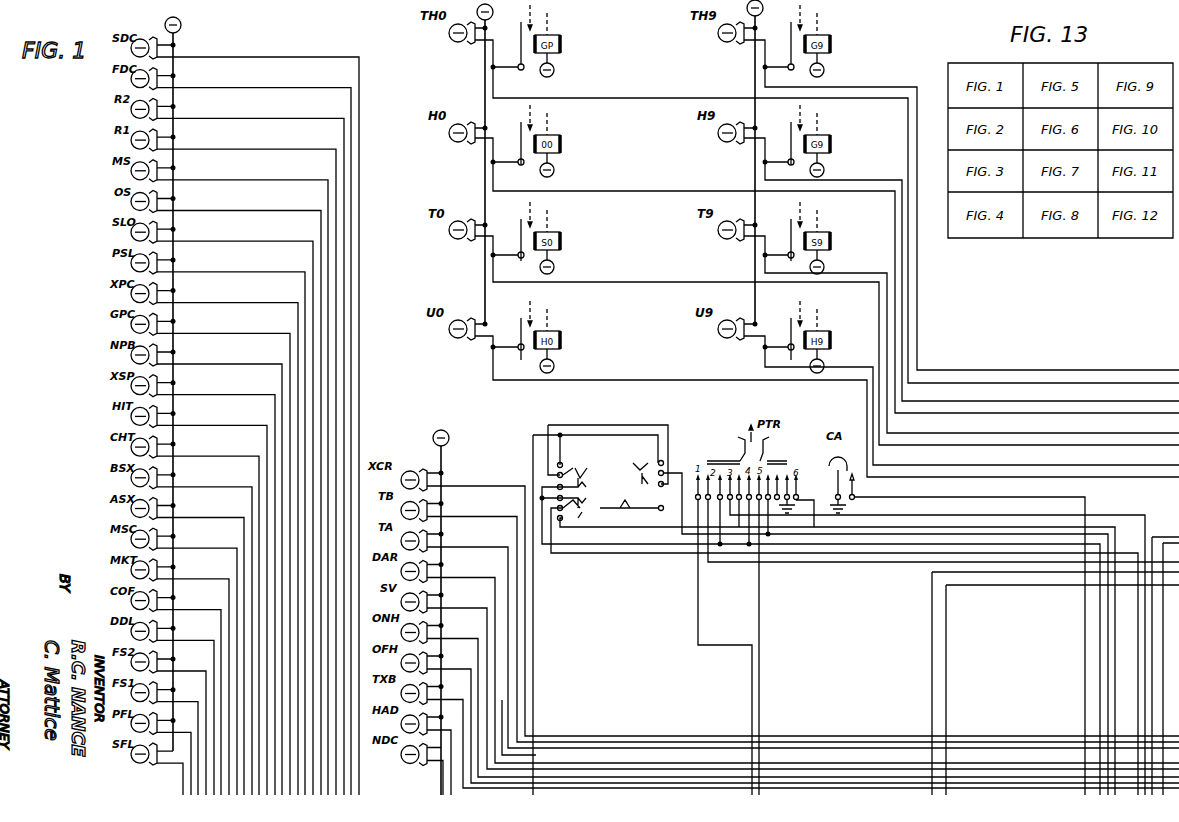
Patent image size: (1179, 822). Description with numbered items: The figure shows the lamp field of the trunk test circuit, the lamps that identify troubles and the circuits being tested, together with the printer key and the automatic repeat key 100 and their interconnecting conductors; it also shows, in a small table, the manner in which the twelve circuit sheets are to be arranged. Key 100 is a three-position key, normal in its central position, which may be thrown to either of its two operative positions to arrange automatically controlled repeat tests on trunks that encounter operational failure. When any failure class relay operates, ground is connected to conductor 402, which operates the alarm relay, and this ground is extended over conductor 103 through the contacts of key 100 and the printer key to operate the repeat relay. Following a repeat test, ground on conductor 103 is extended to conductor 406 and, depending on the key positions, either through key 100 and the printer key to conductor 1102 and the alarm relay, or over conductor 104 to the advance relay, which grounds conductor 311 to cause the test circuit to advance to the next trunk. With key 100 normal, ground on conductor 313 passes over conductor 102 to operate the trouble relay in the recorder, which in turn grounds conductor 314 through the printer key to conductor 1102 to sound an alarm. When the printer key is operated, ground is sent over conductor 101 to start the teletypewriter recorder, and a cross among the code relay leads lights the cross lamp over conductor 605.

The automatic repeat key 100 is at (835, 610).
The conductor 101 is at (943, 524).
The conductor 102 is at (793, 547).
The conductor 103 is at (535, 614).
The conductor 104 is at (1010, 514).
The conductor 311 is at (1087, 501).
The conductor 313 is at (1105, 612).
The conductor 314 is at (752, 688).
The conductor 402 is at (761, 614).
The conductor 406 is at (908, 554).
The conductor 605 is at (605, 734).
The conductor 1102 is at (850, 562).